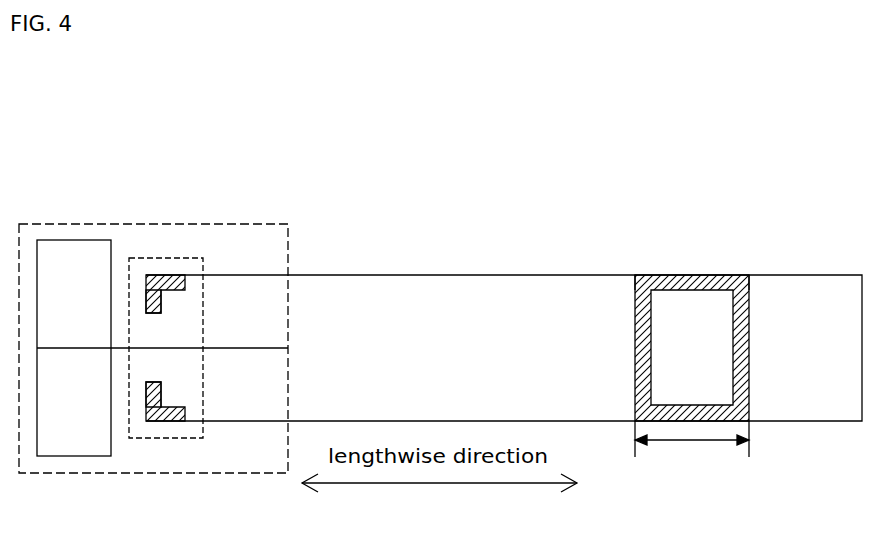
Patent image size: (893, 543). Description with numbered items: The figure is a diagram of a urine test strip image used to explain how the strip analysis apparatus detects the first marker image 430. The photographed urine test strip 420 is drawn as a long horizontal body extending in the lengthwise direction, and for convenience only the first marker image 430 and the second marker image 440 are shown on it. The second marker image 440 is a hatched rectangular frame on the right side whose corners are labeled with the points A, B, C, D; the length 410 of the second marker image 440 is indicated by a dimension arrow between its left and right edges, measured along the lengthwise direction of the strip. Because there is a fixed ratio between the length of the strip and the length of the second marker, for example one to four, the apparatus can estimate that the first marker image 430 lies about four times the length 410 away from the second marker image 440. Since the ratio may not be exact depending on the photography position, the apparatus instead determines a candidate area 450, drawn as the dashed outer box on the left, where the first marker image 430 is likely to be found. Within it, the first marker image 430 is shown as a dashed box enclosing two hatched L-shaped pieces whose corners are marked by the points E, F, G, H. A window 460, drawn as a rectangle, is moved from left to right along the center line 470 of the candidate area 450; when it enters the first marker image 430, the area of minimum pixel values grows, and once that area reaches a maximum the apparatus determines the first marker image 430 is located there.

The length of the second marker image 410 is at (690, 440).
The urine test strip 420 is at (790, 153).
The first marker image 430 is at (165, 438).
The second marker image 440 is at (690, 275).
The candidate area 450 is at (263, 224).
The window 460 is at (72, 456).
The center line 470 is at (240, 348).
The point A is at (635, 275).
The point B is at (635, 423).
The point C is at (749, 275).
The point D is at (749, 423).
The point E is at (153, 314).
The point F is at (153, 381).
The point G is at (185, 283).
The point H is at (185, 413).